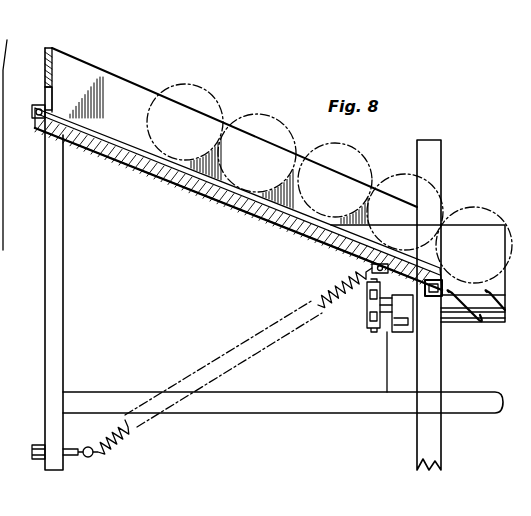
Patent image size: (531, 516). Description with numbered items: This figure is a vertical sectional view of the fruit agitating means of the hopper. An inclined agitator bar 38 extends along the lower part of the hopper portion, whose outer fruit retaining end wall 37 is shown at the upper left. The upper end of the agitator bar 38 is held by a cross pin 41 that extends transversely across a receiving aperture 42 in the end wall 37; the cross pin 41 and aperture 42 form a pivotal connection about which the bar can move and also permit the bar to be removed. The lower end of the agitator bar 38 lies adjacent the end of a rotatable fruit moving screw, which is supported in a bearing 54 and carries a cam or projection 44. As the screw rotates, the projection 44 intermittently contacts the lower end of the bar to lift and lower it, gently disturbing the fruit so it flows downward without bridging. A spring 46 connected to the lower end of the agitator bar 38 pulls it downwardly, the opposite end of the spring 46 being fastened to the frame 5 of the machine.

The frame 5 is at (63, 307).
The end wall 37 is at (45, 50).
The agitator bar 38 is at (88, 128).
The cross pin 41 is at (35, 112).
The receiving aperture 42 is at (53, 95).
The projection 44 is at (433, 283).
The spring 46 is at (130, 431).
The bearing 54 is at (393, 320).